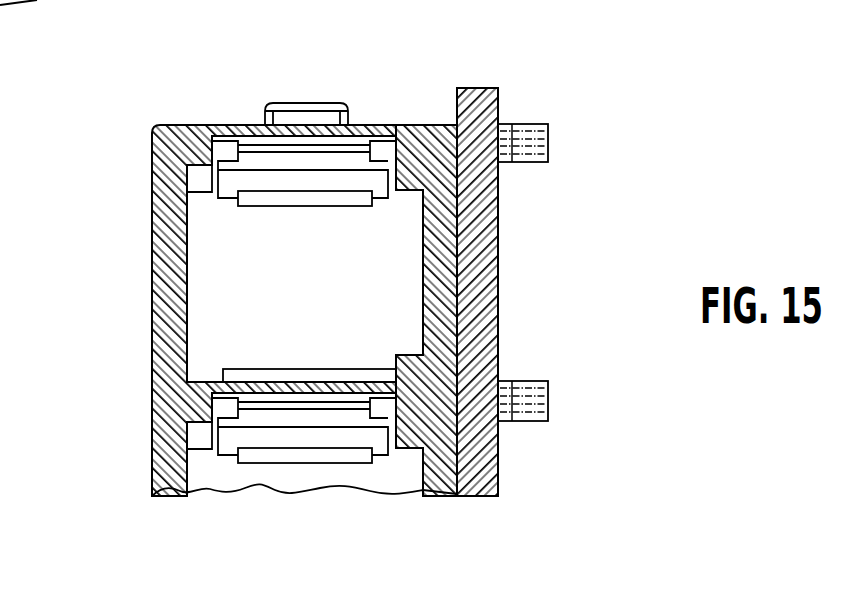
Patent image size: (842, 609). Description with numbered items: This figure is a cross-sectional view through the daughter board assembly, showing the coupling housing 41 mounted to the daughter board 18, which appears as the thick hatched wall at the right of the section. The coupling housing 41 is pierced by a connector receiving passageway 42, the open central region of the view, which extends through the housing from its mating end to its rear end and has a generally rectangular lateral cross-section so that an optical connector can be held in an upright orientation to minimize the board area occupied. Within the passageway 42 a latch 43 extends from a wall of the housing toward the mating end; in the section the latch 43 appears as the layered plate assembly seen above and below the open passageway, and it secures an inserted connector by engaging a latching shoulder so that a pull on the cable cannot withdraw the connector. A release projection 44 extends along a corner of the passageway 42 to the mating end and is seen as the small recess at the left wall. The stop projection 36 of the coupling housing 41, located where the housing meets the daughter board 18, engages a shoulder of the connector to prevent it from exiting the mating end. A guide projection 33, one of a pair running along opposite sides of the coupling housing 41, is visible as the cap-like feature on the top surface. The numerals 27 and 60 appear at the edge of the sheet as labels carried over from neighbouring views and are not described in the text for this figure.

The daughter board 18 is at (482, 98).
The connecting line 27 is at (352, 0).
The guide projection 33 is at (303, 103).
The stop projection 36 is at (460, 202).
The coupling housing 41 is at (420, 124).
The connector receiving passageway 42 is at (328, 290).
The latch 43 is at (272, 200).
The release projection 44 is at (198, 181).
The conduit 60 is at (808, 12).